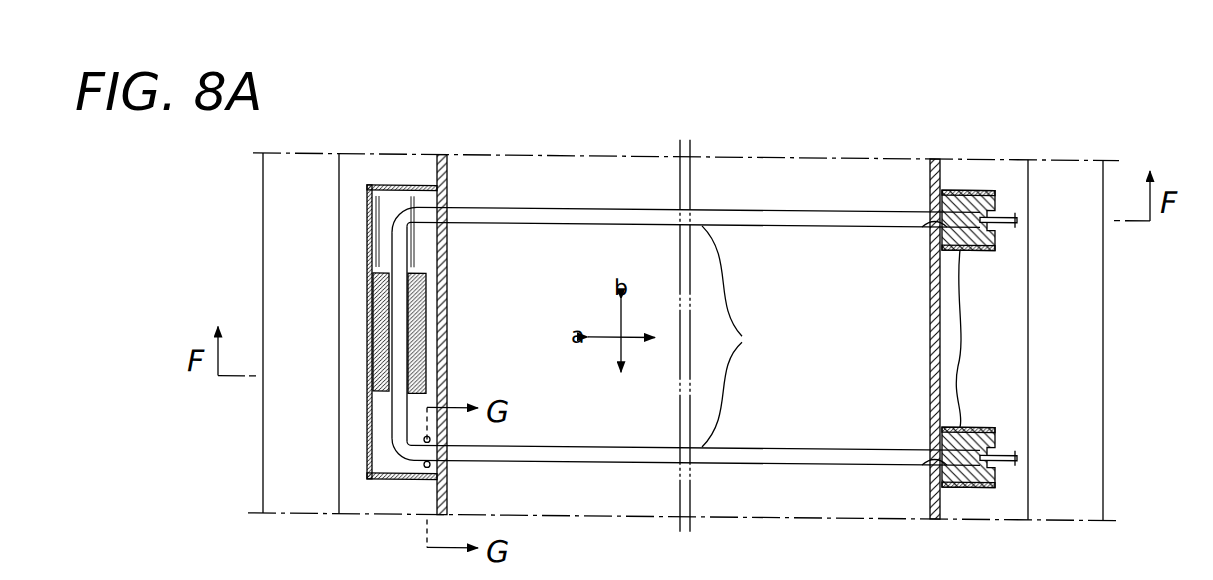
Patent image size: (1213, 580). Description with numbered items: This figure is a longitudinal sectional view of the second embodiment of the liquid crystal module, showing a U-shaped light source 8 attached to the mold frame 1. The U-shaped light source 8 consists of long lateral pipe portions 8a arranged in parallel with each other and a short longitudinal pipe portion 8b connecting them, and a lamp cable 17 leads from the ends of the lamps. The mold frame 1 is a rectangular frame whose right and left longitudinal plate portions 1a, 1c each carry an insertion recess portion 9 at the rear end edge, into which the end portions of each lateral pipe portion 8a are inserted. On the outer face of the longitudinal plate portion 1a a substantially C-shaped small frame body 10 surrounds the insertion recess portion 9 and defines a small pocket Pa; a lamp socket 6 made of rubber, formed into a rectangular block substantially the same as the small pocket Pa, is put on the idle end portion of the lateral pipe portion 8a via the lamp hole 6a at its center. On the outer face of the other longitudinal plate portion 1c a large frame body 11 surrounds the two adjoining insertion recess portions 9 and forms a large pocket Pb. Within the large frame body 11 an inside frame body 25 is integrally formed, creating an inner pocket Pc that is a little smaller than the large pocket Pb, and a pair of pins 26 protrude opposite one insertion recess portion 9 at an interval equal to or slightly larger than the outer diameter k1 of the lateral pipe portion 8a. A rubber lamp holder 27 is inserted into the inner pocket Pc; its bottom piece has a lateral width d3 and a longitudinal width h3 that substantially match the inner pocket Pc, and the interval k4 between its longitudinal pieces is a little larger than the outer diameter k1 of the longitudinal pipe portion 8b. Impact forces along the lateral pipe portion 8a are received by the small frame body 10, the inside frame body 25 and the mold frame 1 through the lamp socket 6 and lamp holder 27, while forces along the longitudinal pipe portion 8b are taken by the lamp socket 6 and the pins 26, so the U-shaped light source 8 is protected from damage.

The mold frame 1 is at (1106, 331).
The longitudinal plate portion 1a is at (931, 336).
The longitudinal plate portion 1c is at (447, 281).
The lamp socket 6 is at (990, 210).
The lamp hole 6a is at (935, 222).
The U-shaped light source 8 is at (787, 203).
The lateral pipe portion 8a is at (736, 337).
The longitudinal pipe portion 8b is at (397, 416).
The insertion recess portion 9 is at (447, 228).
The small frame body 10 is at (962, 244).
The large frame body 11 is at (370, 447).
The lamp cable 17 is at (1018, 213).
The inside frame body 25 is at (422, 343).
The pin 26 is at (424, 465).
The lamp holder 27 is at (420, 370).
The small pocket Pa is at (978, 338).
The large pocket Pb is at (378, 232).
The inner pocket Pc is at (420, 310).
The outer diameter k1 is at (578, 430).
The interval between longitudinal pieces k4 is at (433, 201).
The lateral width of bottom piece d3 is at (373, 158).
The longitudinal width of bottom piece h3 is at (365, 381).